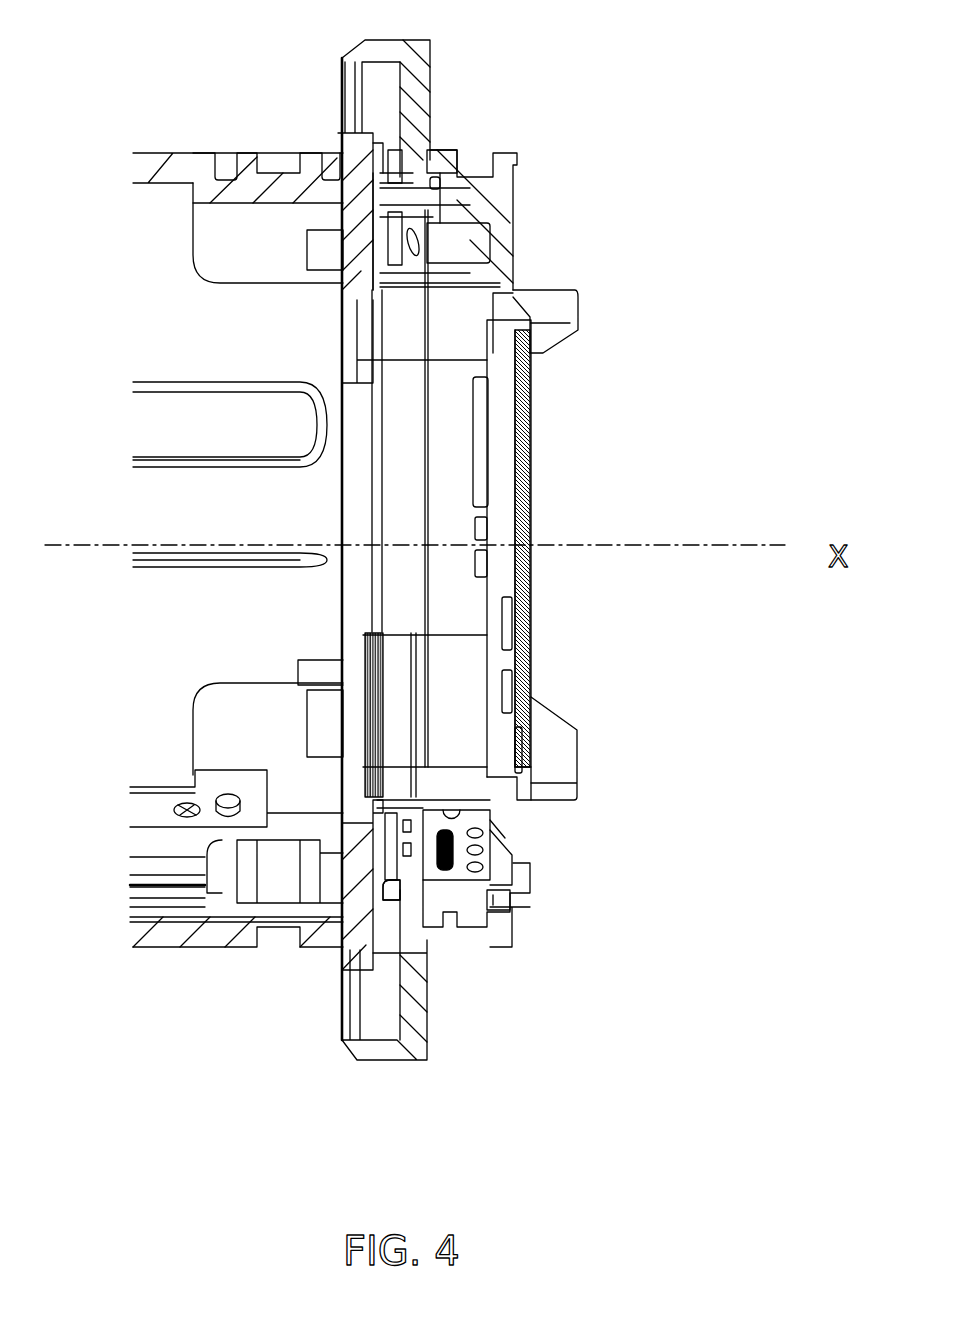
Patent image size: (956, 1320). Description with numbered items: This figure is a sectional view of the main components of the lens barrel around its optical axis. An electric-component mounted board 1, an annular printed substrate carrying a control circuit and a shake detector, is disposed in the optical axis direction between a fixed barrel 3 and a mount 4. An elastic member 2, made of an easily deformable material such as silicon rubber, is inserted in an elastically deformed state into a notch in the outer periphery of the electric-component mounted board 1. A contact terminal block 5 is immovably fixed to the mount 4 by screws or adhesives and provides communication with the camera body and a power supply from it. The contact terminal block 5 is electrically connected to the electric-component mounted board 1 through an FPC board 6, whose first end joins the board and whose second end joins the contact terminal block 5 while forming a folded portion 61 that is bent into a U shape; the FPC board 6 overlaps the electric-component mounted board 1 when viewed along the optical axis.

The electric-component mounted board 1 is at (393, 827).
The elastic member 2 is at (425, 183).
The fixed barrel 3 is at (340, 935).
The mount 4 is at (500, 838).
The contact terminal block 5 is at (500, 902).
The FPC board 6 is at (400, 888).
The folded portion 61 is at (461, 988).